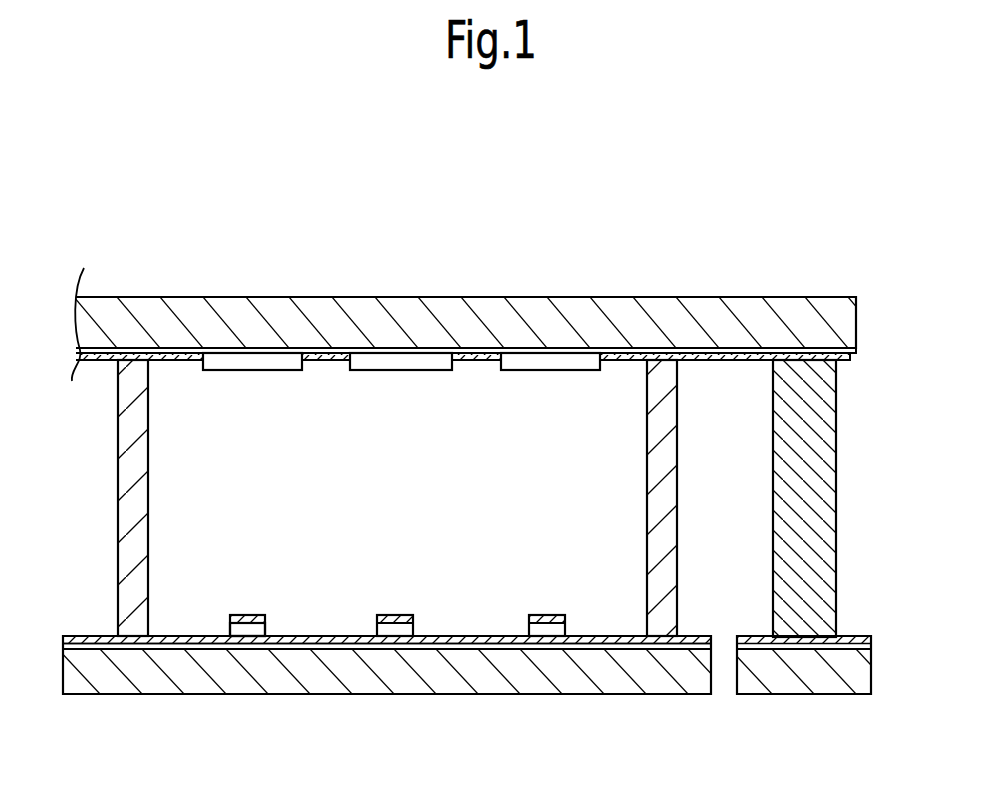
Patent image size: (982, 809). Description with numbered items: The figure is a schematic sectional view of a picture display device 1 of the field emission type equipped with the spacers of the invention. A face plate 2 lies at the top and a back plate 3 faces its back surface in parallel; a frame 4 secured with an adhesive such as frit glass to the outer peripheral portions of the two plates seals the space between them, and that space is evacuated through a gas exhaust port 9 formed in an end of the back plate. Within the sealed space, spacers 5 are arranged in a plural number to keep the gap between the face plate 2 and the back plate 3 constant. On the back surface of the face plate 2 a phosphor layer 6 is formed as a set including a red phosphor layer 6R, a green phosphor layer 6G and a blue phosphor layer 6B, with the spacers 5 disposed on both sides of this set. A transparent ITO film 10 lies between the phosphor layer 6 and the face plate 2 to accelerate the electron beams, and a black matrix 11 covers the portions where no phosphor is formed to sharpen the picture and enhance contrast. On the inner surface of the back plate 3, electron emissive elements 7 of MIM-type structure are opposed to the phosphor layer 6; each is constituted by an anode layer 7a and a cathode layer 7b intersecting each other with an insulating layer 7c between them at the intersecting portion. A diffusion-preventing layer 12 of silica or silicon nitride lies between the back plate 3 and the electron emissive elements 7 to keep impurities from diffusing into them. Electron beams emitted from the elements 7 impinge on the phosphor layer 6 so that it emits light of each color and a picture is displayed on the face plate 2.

The picture display device 1 is at (504, 238).
The face plate 2 is at (262, 297).
The back plate 3 is at (236, 680).
The frame 4 is at (827, 462).
The spacer 5 is at (130, 424).
The phosphor layer 6 is at (520, 452).
The red phosphor layer 6R is at (258, 362).
The green phosphor layer 6G is at (428, 372).
The blue phosphor layer 6B is at (524, 372).
The electron emissive element 7 is at (248, 598).
The anode layer 7a is at (316, 658).
The cathode layer 7b is at (258, 616).
The insulating layer 7c is at (240, 628).
The gas exhaust port 9 is at (721, 682).
The ITO film 10 is at (692, 348).
The black matrix 11 is at (620, 368).
The diffusion-preventing layer 12 is at (459, 649).